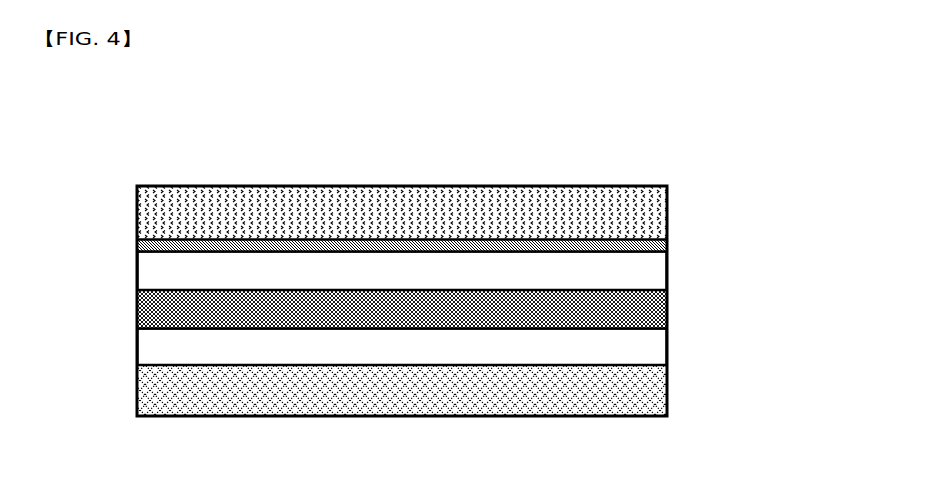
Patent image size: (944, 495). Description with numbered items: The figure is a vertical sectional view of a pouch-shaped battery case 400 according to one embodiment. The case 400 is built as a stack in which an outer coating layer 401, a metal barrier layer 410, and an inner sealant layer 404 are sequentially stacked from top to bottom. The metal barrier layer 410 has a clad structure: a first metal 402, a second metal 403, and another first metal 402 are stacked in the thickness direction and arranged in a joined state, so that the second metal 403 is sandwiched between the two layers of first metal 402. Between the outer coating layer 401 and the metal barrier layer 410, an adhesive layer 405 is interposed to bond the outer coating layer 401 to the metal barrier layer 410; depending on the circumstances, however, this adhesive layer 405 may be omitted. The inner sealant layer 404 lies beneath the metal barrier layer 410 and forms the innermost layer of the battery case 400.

The pouch-shaped battery case 400 is at (114, 163).
The outer coating layer 401 is at (668, 203).
The first metal 402 is at (668, 275).
The second metal 403 is at (668, 315).
The inner sealant layer 404 is at (668, 393).
The adhesive layer 405 is at (668, 243).
The metal barrier layer 410 is at (504, 308).